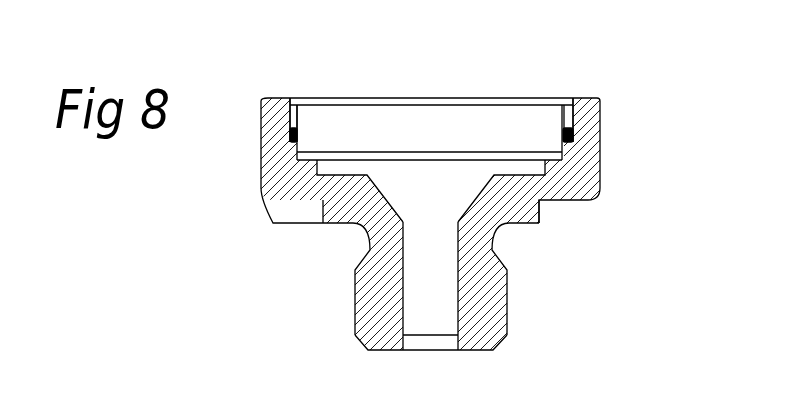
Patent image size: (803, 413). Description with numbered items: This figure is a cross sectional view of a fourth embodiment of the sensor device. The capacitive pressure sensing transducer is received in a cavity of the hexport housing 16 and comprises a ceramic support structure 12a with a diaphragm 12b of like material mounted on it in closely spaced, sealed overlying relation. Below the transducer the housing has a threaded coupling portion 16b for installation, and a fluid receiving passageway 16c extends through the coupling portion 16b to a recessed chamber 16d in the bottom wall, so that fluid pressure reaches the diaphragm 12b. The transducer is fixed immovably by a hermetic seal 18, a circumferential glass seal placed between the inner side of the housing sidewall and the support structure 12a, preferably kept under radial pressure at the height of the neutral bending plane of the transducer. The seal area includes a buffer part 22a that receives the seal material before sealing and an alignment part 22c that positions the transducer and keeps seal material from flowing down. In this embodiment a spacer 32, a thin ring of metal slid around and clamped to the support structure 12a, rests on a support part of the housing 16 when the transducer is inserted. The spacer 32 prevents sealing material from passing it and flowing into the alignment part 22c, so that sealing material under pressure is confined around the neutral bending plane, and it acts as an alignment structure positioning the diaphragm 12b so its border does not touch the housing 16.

The support structure 12a is at (340, 115).
The diaphragm 12b is at (380, 157).
The hexport housing 16 is at (592, 197).
The threaded coupling portion 16b is at (372, 307).
The fluid receiving passageway 16c is at (443, 265).
The recessed chamber 16d is at (522, 168).
The hermetic seal 18 is at (291, 122).
The buffer part 22a is at (288, 106).
The alignment part 22c is at (596, 172).
The spacer 32 is at (291, 138).